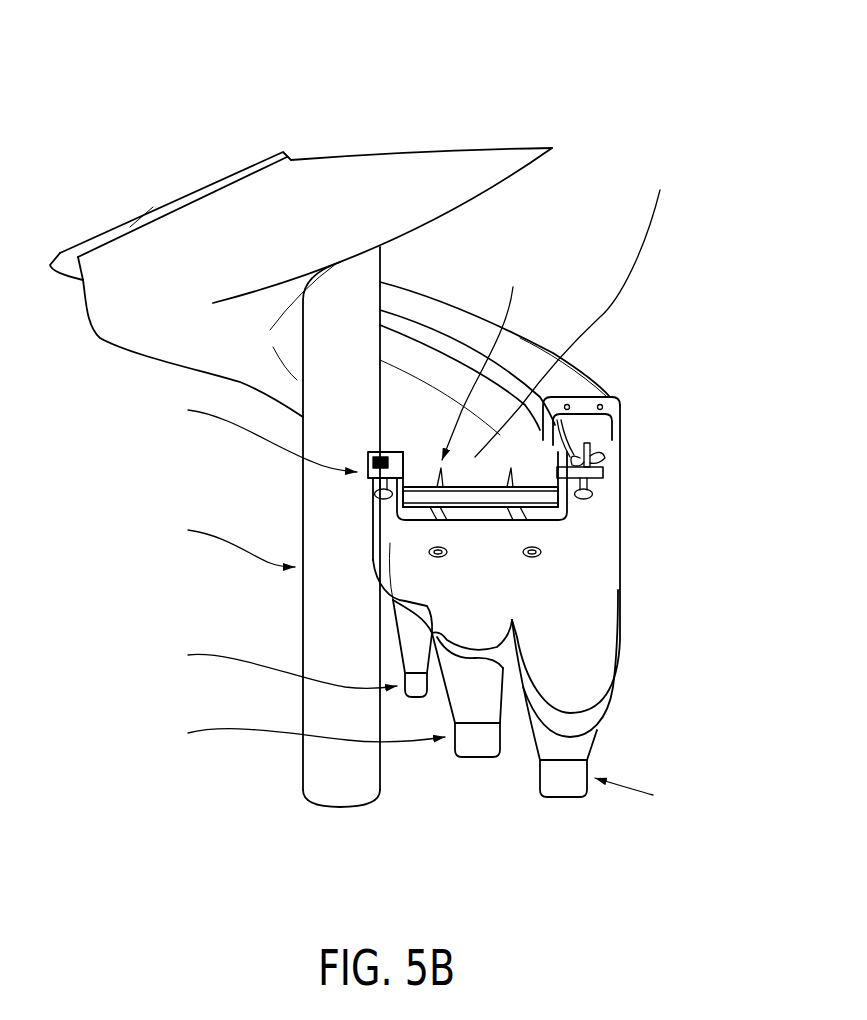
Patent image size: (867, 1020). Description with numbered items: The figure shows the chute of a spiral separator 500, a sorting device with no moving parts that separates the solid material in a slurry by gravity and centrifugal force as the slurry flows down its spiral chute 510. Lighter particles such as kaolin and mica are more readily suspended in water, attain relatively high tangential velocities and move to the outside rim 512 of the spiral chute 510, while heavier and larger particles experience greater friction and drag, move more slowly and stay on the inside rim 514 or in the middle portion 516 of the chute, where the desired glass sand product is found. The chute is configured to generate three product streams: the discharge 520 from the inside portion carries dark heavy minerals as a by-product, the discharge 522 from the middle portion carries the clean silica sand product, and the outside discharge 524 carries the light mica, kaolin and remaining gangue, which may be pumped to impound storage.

The spiral separator 500 is at (385, 446).
The spiral chute 510 is at (627, 548).
The outside rim 512 is at (603, 393).
The inside rim 514 is at (383, 447).
The middle portion 516 is at (510, 457).
The discharge 520 is at (427, 698).
The discharge 522 is at (480, 760).
The outside discharge 524 is at (560, 800).